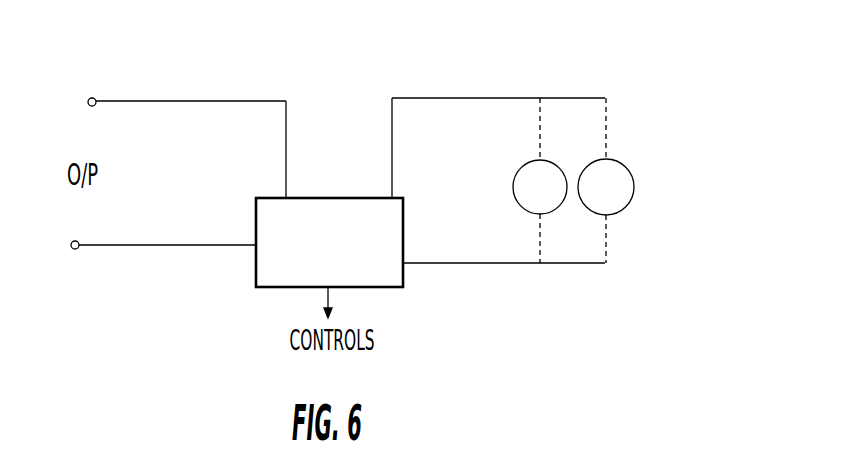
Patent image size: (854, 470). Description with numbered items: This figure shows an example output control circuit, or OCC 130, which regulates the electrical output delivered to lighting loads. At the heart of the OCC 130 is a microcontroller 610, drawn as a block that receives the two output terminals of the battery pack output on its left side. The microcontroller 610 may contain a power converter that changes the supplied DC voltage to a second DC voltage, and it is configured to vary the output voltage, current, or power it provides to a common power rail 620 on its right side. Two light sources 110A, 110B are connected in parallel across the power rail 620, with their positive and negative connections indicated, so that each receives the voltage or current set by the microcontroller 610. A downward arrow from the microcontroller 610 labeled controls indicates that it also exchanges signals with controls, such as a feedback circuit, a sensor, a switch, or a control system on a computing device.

The output control circuit (OCC) 130 is at (643, 90).
The microcontroller 610 is at (362, 198).
The common power rail 620 is at (490, 98).
The light source 110A is at (565, 198).
The light source 110B is at (630, 198).